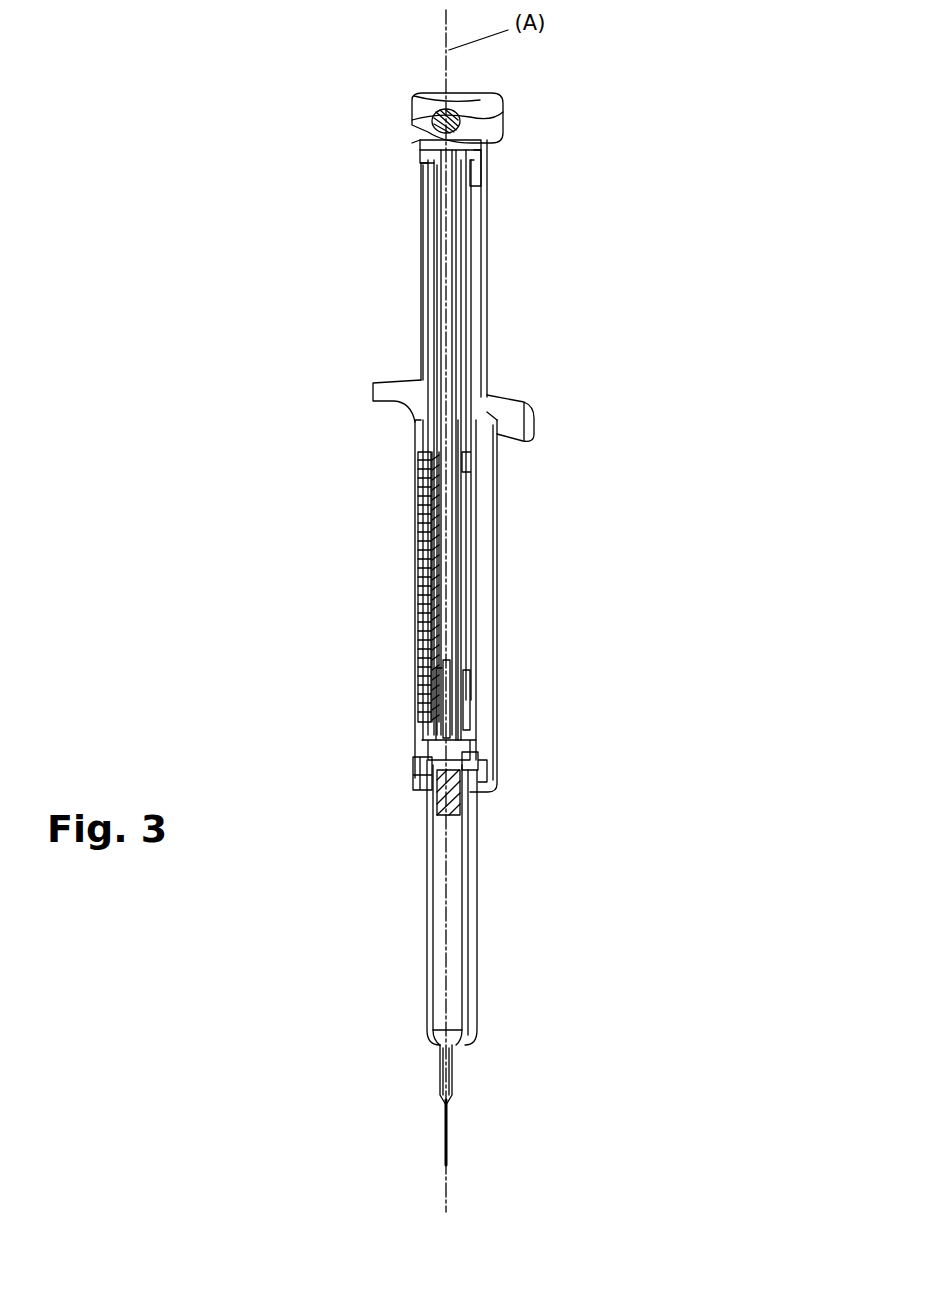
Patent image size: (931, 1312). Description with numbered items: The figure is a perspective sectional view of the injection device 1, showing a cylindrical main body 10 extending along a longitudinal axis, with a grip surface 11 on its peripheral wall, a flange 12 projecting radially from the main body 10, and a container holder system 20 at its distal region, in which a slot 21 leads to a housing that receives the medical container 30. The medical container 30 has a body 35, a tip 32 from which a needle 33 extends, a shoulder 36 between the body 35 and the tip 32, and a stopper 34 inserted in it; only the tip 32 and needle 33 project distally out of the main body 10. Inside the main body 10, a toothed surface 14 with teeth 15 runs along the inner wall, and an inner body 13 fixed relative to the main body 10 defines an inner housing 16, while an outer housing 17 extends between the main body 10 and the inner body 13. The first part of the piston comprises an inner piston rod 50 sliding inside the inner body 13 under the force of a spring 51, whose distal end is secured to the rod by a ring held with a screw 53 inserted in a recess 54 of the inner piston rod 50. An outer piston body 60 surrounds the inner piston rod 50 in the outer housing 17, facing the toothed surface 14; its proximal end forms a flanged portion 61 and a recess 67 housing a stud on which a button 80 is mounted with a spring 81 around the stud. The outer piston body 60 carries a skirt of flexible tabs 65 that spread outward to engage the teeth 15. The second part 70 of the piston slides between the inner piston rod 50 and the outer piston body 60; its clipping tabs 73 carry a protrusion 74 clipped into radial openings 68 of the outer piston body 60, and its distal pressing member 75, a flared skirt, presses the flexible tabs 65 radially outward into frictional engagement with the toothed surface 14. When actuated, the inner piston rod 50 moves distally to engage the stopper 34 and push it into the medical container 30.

The injection device 1 is at (398, 250).
The main body 10 is at (498, 585).
The grip surface 11 is at (498, 520).
The finger flange 12 is at (540, 415).
The inner body 13 is at (455, 408).
The toothed surface 14 is at (418, 545).
The teeth 15 is at (420, 571).
The inner housing 16 is at (448, 657).
The outer housing 17 is at (468, 700).
The container holder system 20 is at (416, 776).
The slot 21 is at (470, 765).
The medical container 30 is at (480, 912).
The tip 32 is at (460, 1072).
The needle 33 is at (450, 1140).
The stopper 34 is at (455, 815).
The body 35 is at (470, 967).
The shoulder 36 is at (437, 1043).
The inner piston rod 50 is at (447, 303).
The spring 51 is at (458, 503).
The screw 53 is at (440, 741).
The recess 54 is at (442, 686).
The outer piston body 60 is at (490, 222).
The flanged portion 61 is at (481, 137).
The flexible tabs 65 is at (471, 461).
The recess 67 is at (416, 141).
The radial openings 68 is at (474, 168).
The second part 70 is at (430, 323).
The clipping tabs 73 is at (430, 196).
The protrusion 74 is at (430, 172).
The pressing member 75 is at (422, 465).
The button 80 is at (497, 100).
The spring 81 is at (410, 128).